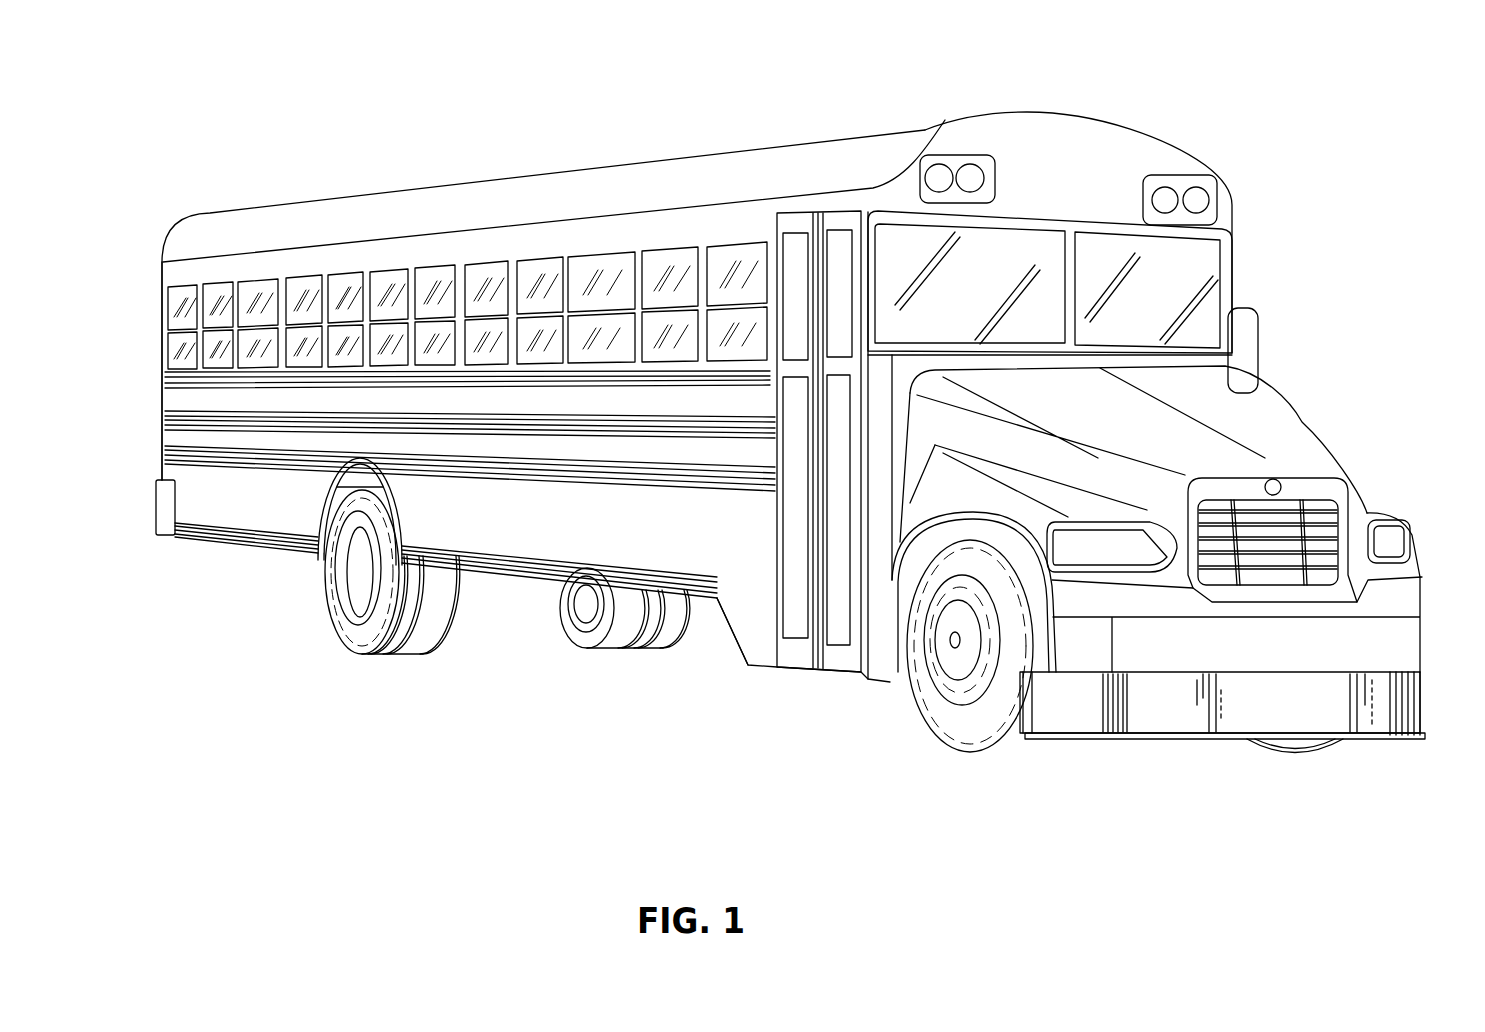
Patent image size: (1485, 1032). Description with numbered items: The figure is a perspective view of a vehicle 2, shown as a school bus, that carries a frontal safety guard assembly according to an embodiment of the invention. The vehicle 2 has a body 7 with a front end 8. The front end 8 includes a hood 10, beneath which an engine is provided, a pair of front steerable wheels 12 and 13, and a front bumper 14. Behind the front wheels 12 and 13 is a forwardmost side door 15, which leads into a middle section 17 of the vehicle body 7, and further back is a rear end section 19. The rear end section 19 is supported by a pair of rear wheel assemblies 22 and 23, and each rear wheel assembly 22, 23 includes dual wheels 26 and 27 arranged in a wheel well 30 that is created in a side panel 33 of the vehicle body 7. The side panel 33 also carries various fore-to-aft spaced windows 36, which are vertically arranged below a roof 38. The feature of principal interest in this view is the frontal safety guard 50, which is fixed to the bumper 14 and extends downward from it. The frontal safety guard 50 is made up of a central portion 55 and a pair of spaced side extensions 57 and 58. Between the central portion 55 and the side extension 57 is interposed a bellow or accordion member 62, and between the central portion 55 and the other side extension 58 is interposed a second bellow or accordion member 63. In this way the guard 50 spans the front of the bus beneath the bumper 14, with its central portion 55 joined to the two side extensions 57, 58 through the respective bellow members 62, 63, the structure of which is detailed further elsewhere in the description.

The vehicle 2 is at (1300, 96).
The body 7 is at (222, 510).
The front end 8 is at (1342, 400).
The hood 10 is at (1327, 463).
The front steerable wheel 12 is at (1012, 745).
The front steerable wheel 13 is at (1313, 745).
The front bumper 14 is at (1153, 652).
The forwardmost side door 15 is at (800, 633).
The middle section 17 is at (497, 452).
The rear end section 19 is at (175, 437).
The rear wheel assembly 22 is at (324, 629).
The rear wheel assembly 23 is at (655, 662).
The dual wheel 26 is at (322, 568).
The dual wheel 27 is at (420, 655).
The wheel well 30 is at (370, 474).
The side panel 33 is at (674, 537).
The windows 36 is at (346, 290).
The roof 38 is at (562, 176).
The frontal safety guard 50 is at (1362, 720).
The central portion 55 is at (1227, 710).
The side extension 57 is at (1065, 715).
The side extension 58 is at (1410, 683).
The bellow or accordion member 62 is at (1118, 732).
The bellow or accordion member 63 is at (1393, 728).